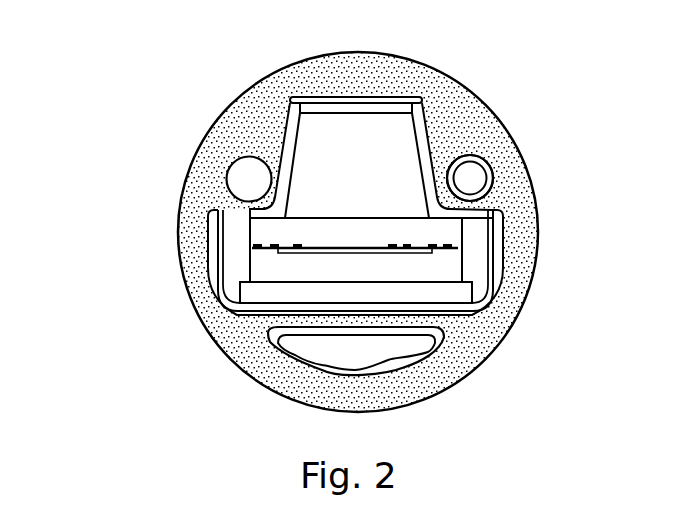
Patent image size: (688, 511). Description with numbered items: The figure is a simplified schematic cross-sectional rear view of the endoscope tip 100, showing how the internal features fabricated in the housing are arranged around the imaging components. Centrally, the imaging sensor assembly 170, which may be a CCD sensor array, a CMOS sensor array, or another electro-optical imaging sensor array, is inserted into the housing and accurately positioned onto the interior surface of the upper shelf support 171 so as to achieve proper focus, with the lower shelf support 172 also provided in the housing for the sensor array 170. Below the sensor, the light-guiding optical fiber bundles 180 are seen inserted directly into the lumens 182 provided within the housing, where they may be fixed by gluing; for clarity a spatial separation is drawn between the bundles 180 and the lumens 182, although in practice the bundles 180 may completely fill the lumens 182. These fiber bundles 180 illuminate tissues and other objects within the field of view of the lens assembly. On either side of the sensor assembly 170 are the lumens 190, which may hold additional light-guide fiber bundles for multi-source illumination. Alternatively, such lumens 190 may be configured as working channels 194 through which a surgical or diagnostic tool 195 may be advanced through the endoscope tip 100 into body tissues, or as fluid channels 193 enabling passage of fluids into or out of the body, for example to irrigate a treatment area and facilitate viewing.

The endoscope tip 100 is at (440, 70).
The imaging sensor assembly 170 is at (453, 264).
The upper shelf support 171 is at (190, 212).
The lower shelf support 172 is at (447, 316).
The light-guiding optical fiber bundles 180 is at (452, 343).
The lumens 182 is at (405, 367).
The lumens 190 is at (255, 156).
The fluid channels 193 is at (246, 202).
The working channels 194 is at (493, 174).
The tool 195 is at (470, 174).